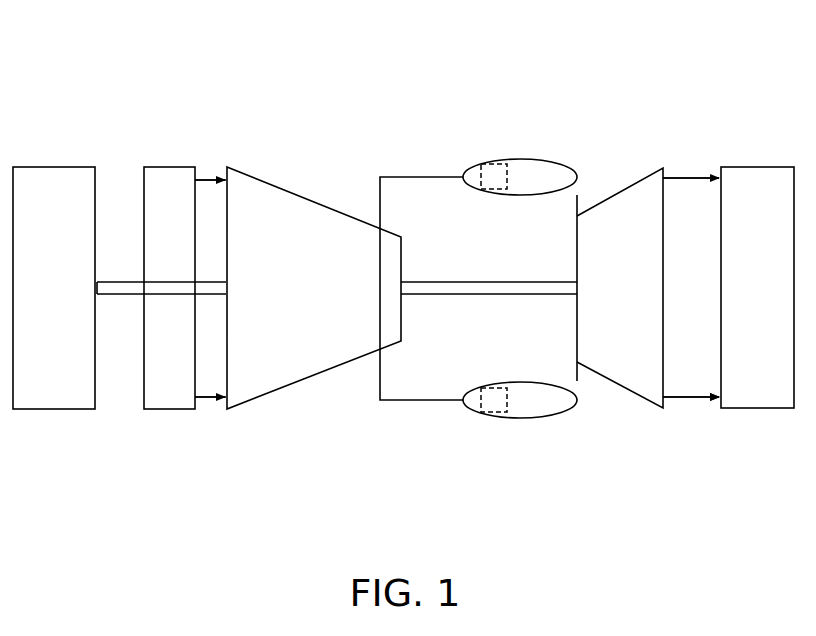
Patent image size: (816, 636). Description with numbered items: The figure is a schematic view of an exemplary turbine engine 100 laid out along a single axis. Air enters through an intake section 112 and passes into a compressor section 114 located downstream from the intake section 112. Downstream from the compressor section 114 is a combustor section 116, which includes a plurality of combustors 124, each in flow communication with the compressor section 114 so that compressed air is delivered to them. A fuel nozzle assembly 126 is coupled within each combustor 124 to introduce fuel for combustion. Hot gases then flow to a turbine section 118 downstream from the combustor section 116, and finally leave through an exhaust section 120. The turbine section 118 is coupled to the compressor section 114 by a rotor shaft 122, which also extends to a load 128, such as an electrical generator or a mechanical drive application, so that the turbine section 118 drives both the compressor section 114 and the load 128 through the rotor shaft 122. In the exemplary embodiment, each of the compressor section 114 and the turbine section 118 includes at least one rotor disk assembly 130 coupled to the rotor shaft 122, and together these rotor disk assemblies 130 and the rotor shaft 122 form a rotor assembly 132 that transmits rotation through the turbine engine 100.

The turbine engine 100 is at (158, 58).
The intake section 112 is at (170, 166).
The compressor section 114 is at (316, 375).
The combustor section 116 is at (593, 156).
The turbine section 118 is at (650, 169).
The exhaust section 120 is at (760, 166).
The rotor shaft 122 is at (443, 296).
The combustor 124 is at (552, 160).
The fuel nozzle assembly 126 is at (494, 162).
The load 128 is at (62, 166).
The rotor disk assembly 130 is at (341, 158).
The rotor assembly 132 is at (642, 473).